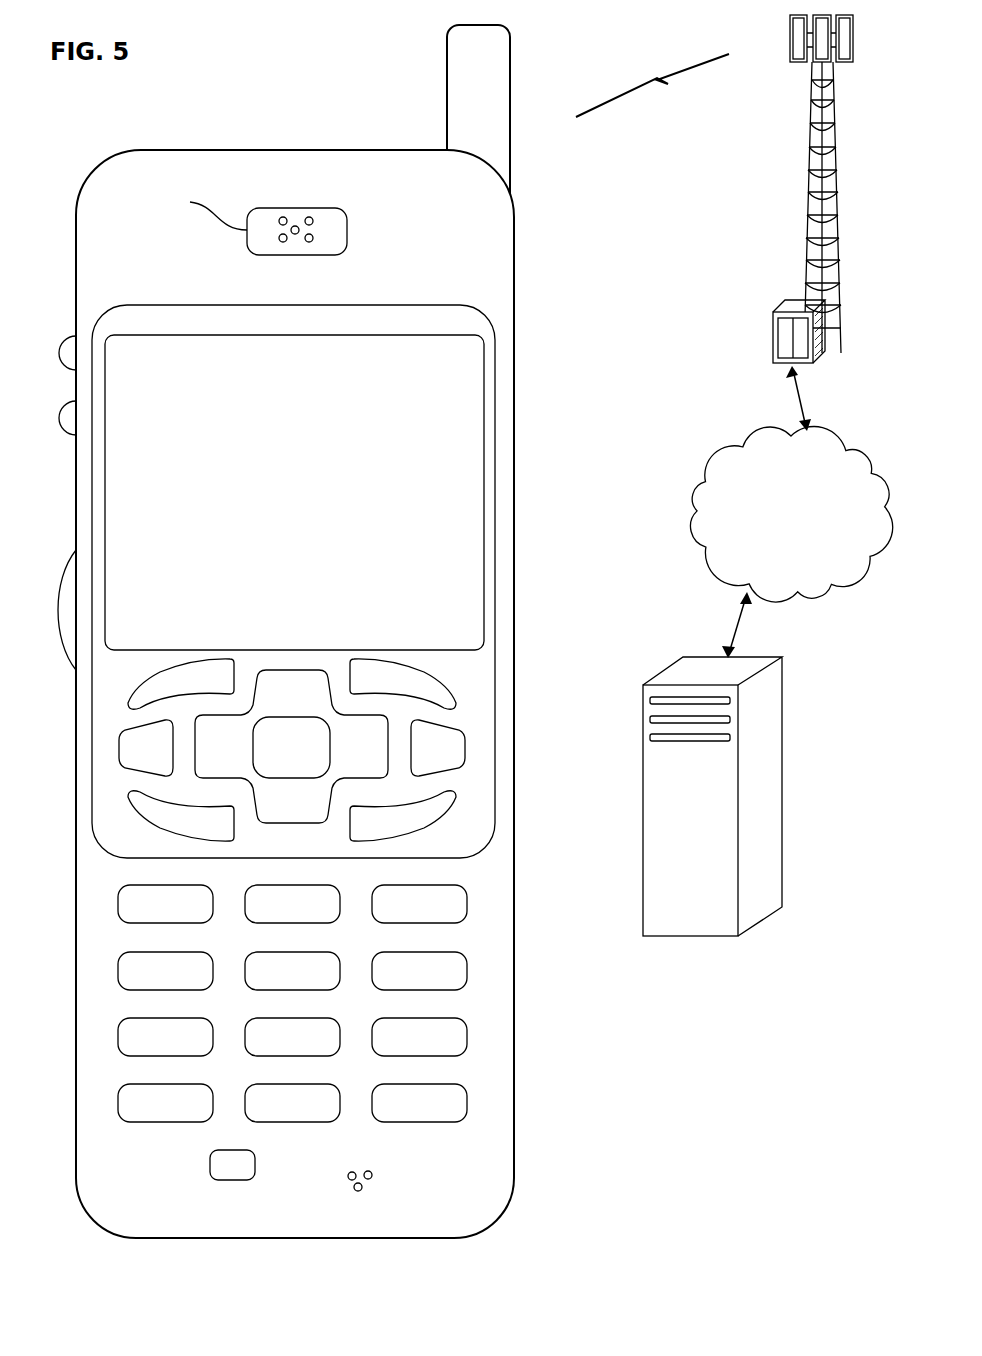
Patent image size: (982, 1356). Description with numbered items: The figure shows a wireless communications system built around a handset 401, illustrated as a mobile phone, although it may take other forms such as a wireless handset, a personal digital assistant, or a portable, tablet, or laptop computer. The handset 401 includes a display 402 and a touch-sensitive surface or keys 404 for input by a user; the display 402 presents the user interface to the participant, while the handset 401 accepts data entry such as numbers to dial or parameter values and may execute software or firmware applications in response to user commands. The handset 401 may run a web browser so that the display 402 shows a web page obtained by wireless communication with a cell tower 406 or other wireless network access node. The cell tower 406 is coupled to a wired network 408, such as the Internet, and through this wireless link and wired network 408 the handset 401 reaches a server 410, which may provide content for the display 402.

The handset 401 is at (134, 1237).
The display 402 is at (487, 349).
The keys 404 is at (520, 1053).
The cell tower 406 is at (808, 203).
The wired network 408 is at (708, 566).
The server 410 is at (687, 936).